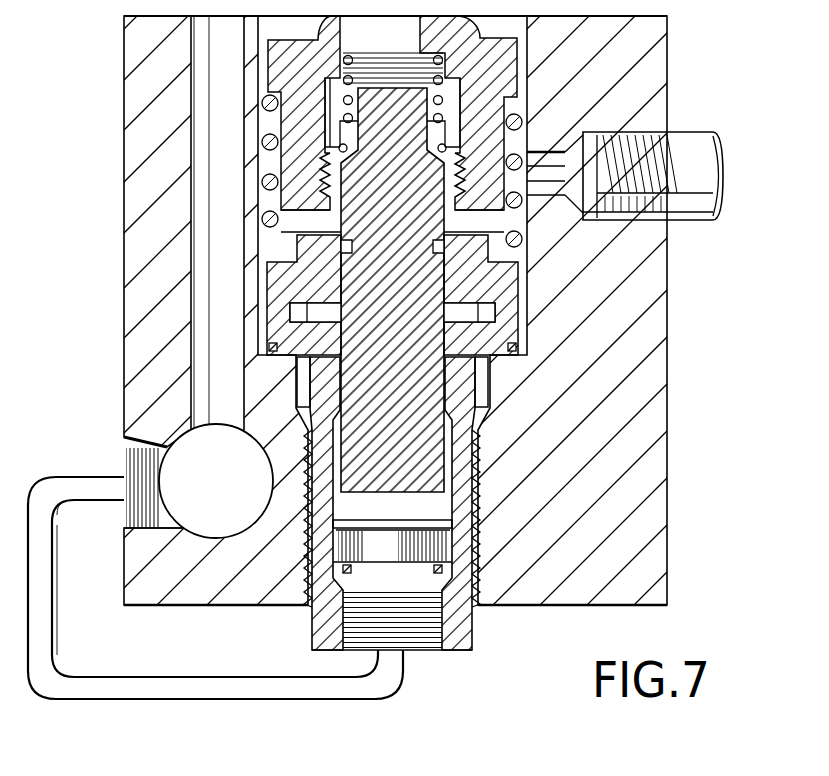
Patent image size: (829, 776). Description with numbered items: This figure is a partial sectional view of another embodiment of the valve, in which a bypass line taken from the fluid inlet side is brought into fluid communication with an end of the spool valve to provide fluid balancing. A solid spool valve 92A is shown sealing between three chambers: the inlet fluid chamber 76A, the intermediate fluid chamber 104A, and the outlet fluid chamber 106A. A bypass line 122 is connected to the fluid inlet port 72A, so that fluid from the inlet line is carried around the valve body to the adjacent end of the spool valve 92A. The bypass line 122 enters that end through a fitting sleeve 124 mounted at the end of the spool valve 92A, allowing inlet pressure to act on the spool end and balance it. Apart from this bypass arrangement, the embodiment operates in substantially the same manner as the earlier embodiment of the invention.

The inlet fluid chamber 76A is at (453, 103).
The intermediate fluid chamber 104A is at (448, 238).
The solid spool valve 92A is at (437, 298).
The outlet fluid chamber 106A is at (445, 380).
The fluid inlet port 72A is at (197, 475).
The bypass line 122 is at (43, 632).
The fitting sleeve 124 is at (458, 622).